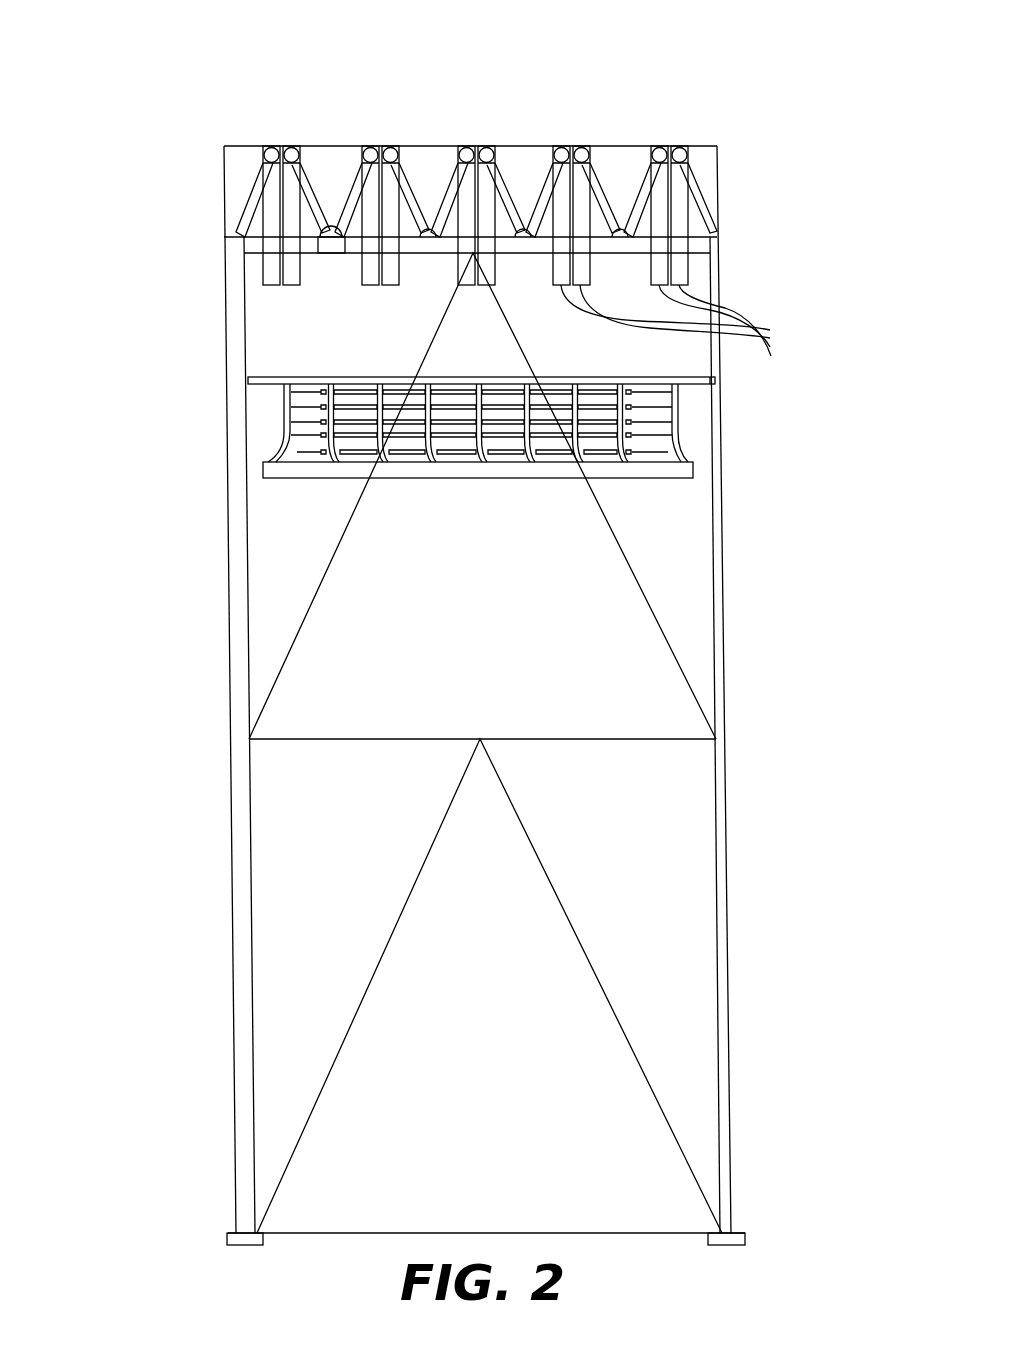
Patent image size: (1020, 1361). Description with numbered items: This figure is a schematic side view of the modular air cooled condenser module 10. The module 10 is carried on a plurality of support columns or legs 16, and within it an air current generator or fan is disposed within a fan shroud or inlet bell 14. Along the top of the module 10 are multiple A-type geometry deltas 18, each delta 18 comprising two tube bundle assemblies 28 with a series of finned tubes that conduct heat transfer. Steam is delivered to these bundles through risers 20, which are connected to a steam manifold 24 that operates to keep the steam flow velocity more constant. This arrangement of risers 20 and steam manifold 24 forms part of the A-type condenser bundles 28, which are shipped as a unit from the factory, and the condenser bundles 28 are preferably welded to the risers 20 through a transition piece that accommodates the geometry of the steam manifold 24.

The air cooled condenser module 10 is at (133, 103).
The fan shroud or inlet bell 14 is at (665, 418).
The support columns or legs 16 is at (232, 905).
The A-type geometry deltas 18 is at (300, 145).
The risers 20 is at (685, 321).
The steam manifold 24 is at (282, 145).
The tube bundle assemblies 28 is at (252, 201).